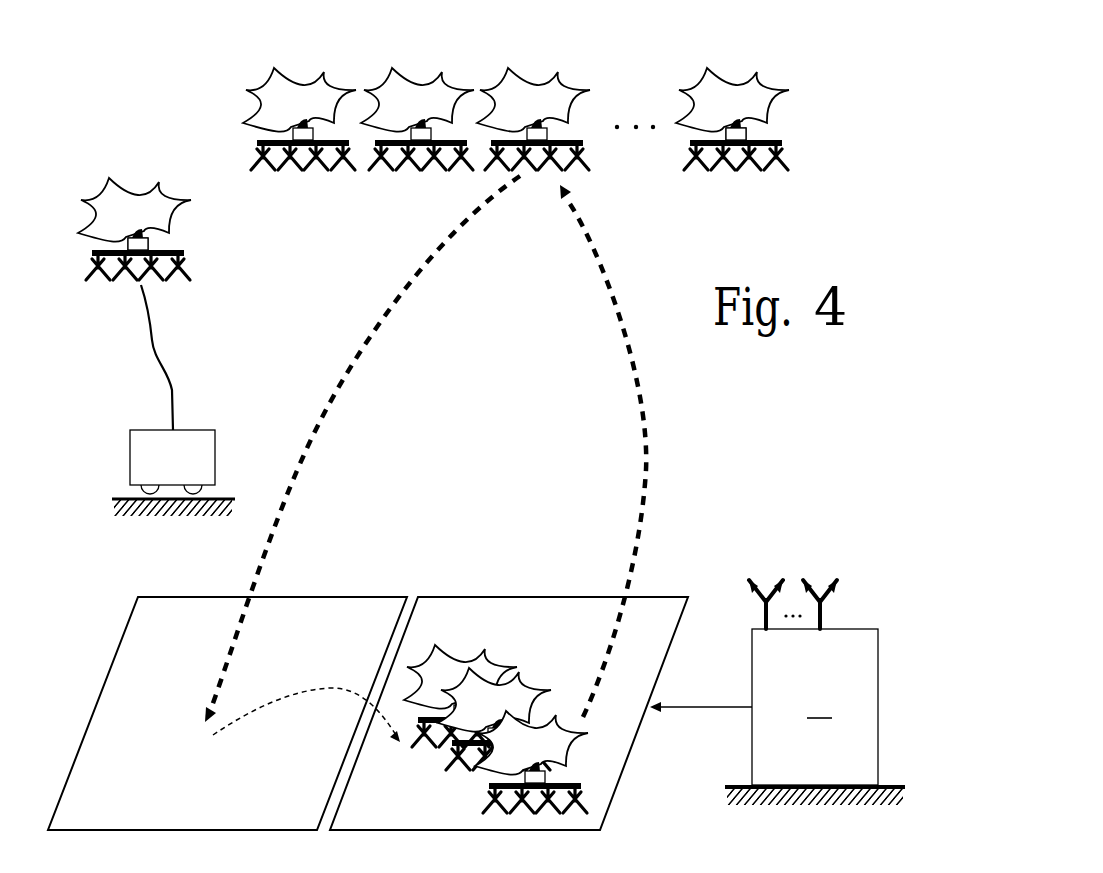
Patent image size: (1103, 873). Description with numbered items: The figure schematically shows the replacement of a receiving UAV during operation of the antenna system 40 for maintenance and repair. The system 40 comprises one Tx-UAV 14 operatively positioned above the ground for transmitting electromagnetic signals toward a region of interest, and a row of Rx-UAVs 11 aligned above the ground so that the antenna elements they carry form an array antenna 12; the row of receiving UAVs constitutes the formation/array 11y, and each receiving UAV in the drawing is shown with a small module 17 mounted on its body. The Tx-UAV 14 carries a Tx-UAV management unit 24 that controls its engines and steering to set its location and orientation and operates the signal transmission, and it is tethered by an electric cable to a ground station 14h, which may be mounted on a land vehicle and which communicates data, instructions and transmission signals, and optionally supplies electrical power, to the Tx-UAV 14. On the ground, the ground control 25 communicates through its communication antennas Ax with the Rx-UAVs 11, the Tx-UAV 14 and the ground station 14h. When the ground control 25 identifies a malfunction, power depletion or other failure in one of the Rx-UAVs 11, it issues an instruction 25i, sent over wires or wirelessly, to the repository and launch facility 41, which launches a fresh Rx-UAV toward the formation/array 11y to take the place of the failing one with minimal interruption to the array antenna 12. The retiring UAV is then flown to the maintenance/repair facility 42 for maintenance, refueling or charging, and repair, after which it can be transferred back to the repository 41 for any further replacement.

The Tx-UAV 14 is at (135, 157).
The Rx-UAV 11 is at (262, 132).
The Tx-UAV management unit 24 is at (148, 246).
The ground station 14h is at (130, 455).
The system 40 is at (300, 303).
The formation/array 11y is at (800, 63).
The array antenna 12 is at (800, 153).
The drone module 17 is at (723, 133).
The maintenance/repair facility 42 is at (100, 695).
The repository and launch facility 41 is at (515, 597).
The communication antenna Ax is at (750, 565).
The instruction 25i is at (695, 707).
The ground control 25 is at (815, 717).